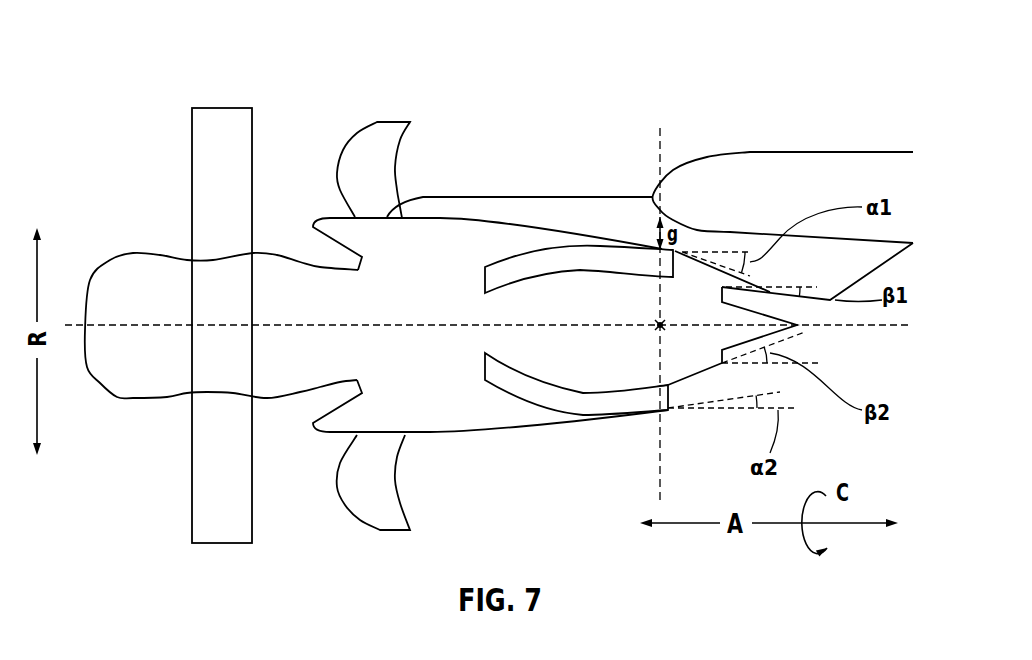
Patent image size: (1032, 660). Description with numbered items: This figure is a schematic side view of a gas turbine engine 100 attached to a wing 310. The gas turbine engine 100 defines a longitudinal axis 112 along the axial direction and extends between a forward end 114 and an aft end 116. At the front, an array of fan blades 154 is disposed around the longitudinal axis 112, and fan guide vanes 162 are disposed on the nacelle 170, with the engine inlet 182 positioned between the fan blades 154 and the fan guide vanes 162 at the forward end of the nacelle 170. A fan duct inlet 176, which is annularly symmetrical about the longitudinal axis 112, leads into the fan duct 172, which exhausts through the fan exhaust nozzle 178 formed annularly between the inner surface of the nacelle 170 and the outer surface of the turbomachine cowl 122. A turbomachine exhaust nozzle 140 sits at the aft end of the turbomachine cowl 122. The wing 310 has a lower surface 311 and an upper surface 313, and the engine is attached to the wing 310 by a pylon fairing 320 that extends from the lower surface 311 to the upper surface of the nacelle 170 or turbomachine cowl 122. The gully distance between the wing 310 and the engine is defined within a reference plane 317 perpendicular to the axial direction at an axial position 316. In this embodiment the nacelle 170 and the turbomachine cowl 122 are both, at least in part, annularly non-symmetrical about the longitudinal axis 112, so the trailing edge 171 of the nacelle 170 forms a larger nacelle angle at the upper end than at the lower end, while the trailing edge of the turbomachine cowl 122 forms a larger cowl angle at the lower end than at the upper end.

The gas turbine engine 100 is at (540, 100).
The longitudinal axis 112 is at (368, 332).
The forward end 114 is at (88, 285).
The aft end 116 is at (767, 345).
The turbomachine cowl 122 is at (685, 362).
The turbomachine exhaust nozzle 140 is at (745, 285).
The fan blades 154 is at (223, 118).
The fan guide vanes 162 is at (385, 132).
The nacelle 170 is at (487, 238).
The trailing edge of the nacelle 171 is at (684, 250).
The fan duct 172 is at (548, 398).
The fan duct inlet 176 is at (485, 282).
The fan exhaust nozzle 178 is at (662, 396).
The engine inlet 182 is at (300, 235).
The wing 310 is at (805, 165).
The lower surface 311 is at (700, 228).
The upper surface 313 is at (750, 152).
The axial position 316 is at (660, 323).
The reference plane 317 is at (663, 455).
The pylon fairing 320 is at (448, 207).